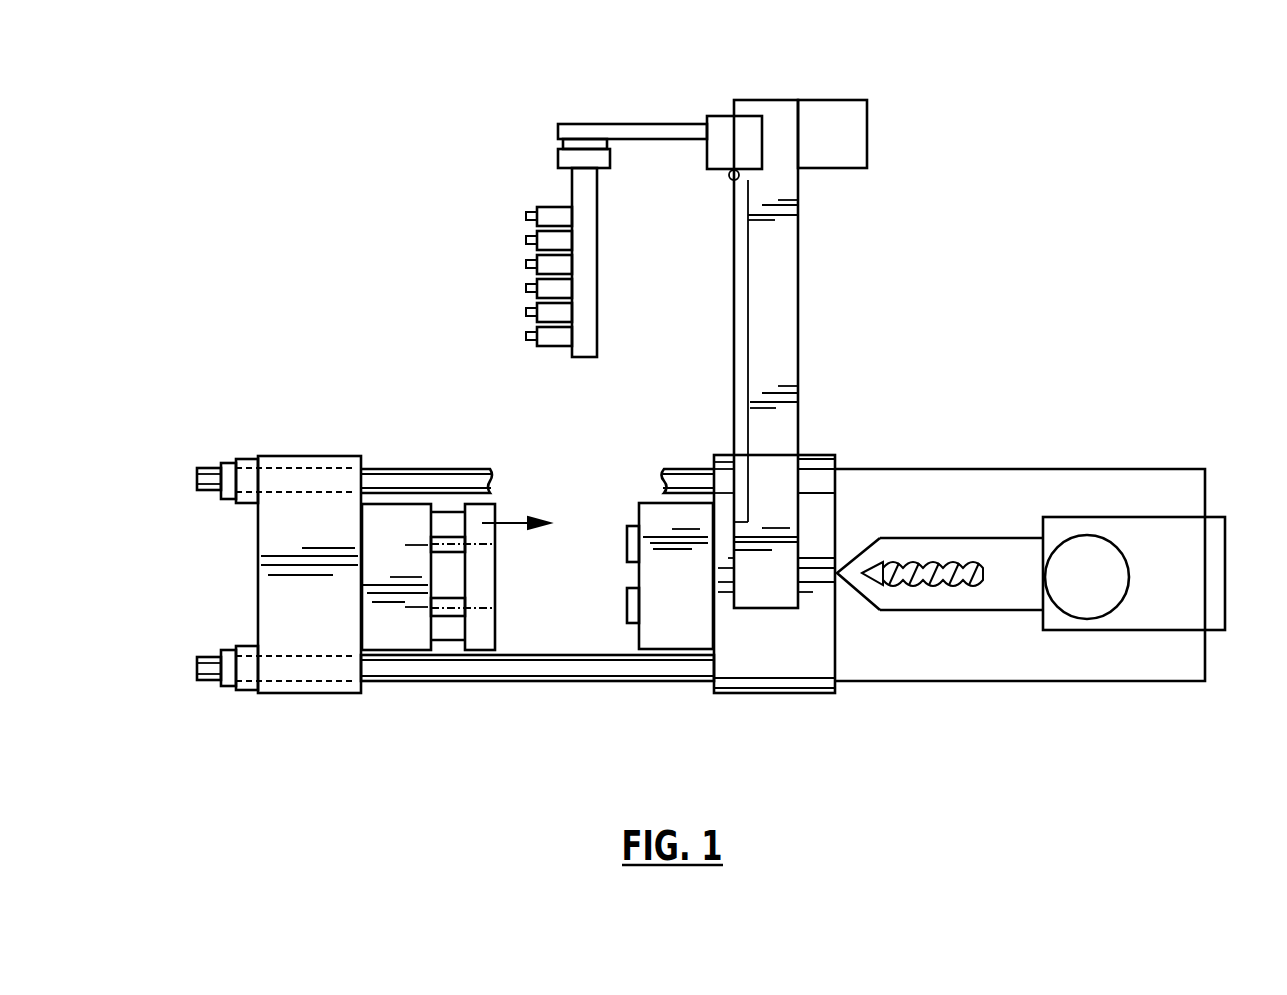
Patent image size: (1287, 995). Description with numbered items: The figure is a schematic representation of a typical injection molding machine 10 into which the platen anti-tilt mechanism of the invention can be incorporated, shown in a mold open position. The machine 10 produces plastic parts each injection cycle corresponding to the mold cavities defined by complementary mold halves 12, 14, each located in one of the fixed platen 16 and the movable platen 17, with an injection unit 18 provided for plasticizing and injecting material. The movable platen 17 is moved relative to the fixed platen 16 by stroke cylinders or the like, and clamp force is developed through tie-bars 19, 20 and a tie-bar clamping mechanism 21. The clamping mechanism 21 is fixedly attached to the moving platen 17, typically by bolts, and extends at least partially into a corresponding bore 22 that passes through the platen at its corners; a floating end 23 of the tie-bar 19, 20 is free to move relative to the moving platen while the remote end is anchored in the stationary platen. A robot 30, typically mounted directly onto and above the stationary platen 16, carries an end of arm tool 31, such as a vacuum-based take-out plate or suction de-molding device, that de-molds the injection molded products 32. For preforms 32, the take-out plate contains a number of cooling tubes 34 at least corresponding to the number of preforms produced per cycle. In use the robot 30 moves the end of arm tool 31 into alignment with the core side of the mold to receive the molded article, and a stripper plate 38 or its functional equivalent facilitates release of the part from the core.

The injection molding machine 10 is at (277, 122).
The mold half 12 is at (652, 625).
The mold half 14 is at (398, 627).
The fixed platen 16 is at (763, 667).
The movable platen 17 is at (332, 465).
The injection unit 18 is at (982, 667).
The tie-bar 19 is at (563, 670).
The tie-bar 20 is at (468, 472).
The tie-bar clamping mechanism 21 is at (250, 462).
The bore 22 is at (292, 485).
The floating end 23 is at (208, 473).
The robot 30 is at (718, 115).
The end of arm tool 31 is at (588, 297).
The injection molded products 32 is at (527, 238).
The cooling tubes 34 is at (507, 234).
The stripper plate 38 is at (485, 580).